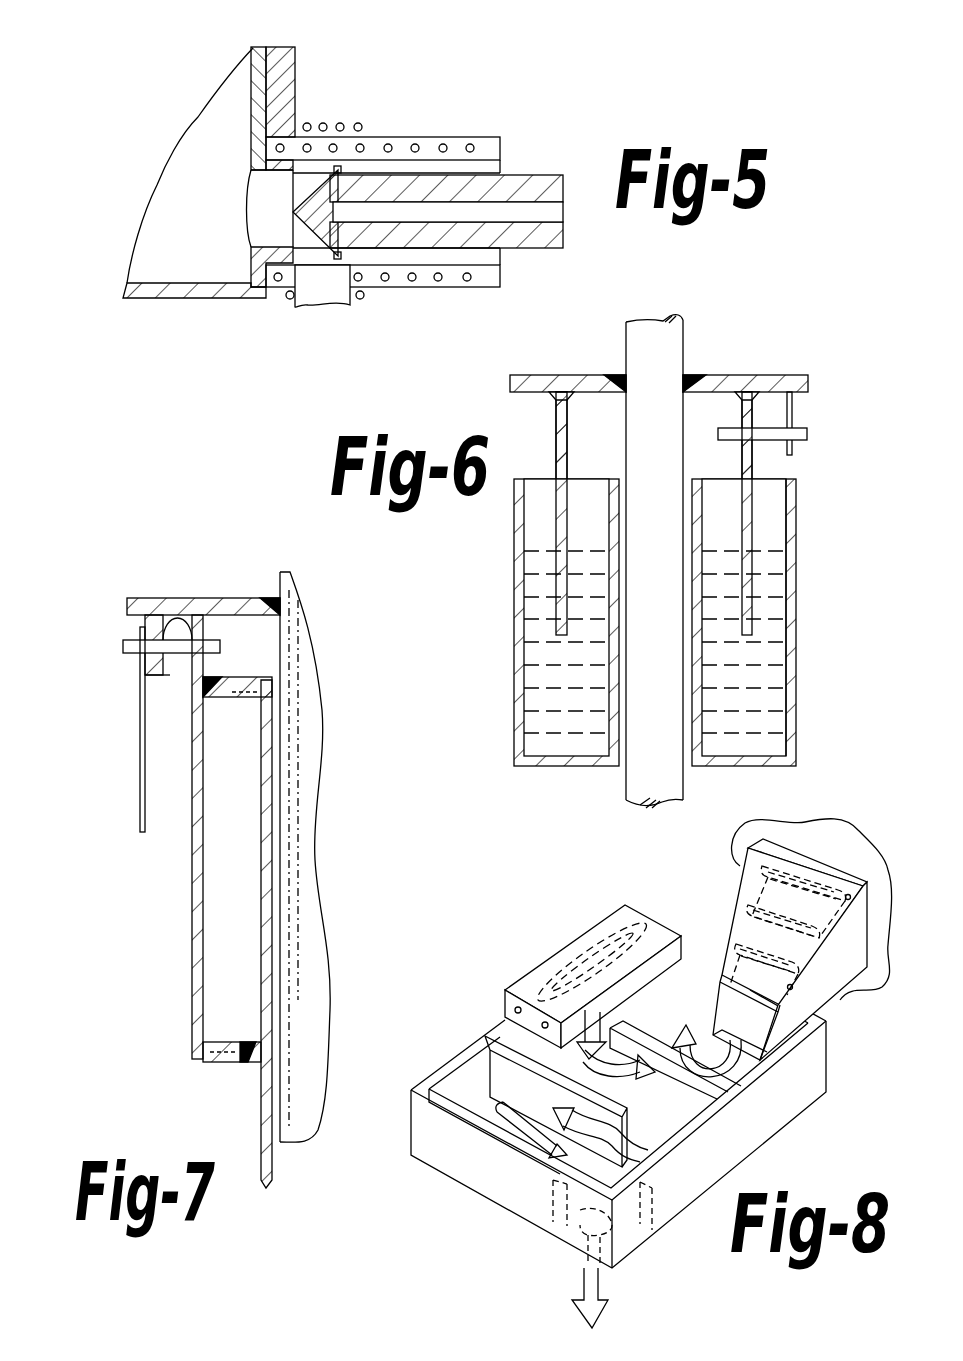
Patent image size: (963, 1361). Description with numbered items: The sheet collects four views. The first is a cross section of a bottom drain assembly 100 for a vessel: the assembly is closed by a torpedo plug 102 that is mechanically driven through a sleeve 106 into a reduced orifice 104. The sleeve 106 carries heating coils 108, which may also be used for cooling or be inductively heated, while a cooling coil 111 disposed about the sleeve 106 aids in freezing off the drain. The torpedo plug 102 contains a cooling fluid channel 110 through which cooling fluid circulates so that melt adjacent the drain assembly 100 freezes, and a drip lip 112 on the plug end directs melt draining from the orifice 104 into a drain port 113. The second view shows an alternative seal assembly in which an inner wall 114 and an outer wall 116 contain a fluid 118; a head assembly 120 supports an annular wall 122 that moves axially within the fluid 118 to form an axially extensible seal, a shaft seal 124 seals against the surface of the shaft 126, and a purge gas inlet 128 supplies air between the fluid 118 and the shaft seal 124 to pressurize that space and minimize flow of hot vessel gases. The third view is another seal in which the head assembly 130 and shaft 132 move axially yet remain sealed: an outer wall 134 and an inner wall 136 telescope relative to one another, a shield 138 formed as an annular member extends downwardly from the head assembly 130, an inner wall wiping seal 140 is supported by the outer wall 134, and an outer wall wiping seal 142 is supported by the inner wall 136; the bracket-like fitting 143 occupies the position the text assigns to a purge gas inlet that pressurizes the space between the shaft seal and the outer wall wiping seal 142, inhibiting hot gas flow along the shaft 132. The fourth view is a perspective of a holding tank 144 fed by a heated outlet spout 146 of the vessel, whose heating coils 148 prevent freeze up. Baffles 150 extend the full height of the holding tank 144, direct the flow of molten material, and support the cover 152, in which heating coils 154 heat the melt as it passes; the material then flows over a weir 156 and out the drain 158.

In FIG. 5, the drain assembly 100 is at (430, 126).
In FIG. 5, the torpedo plug 102 is at (512, 191).
In FIG. 5, the reduced orifice 104 is at (291, 242).
In FIG. 5, the sleeve 106 is at (422, 279).
In FIG. 5, the heating coils 108 is at (469, 281).
In FIG. 5, the cooling fluid channel 110 is at (523, 220).
In FIG. 5, the cooling coil 111 is at (358, 125).
In FIG. 5, the drip lip 112 is at (345, 258).
In FIG. 5, the drain port 113 is at (313, 280).
In FIG. 6, the inner wall 114 is at (700, 550).
In FIG. 6, the outer wall 116 is at (790, 586).
In FIG. 6, the fluid 118 is at (770, 637).
In FIG. 6, the head assembly 120 is at (775, 375).
In FIG. 6, the annular wall 122 is at (753, 467).
In FIG. 6, the shaft seal 124 is at (693, 375).
In FIG. 6, the shaft 126 is at (637, 423).
In FIG. 6, the purge gas inlet 128 is at (763, 428).
In FIG. 7, the head assembly 130 is at (168, 600).
In FIG. 7, the shaft 132 is at (302, 668).
In FIG. 7, the outer wall 134 is at (191, 905).
In FIG. 7, the inner wall 136 is at (272, 912).
In FIG. 7, the shield 138 is at (140, 788).
In FIG. 7, the inner wall wiping seal 140 is at (220, 1062).
In FIG. 7, the outer wall wiping seal 142 is at (212, 700).
In FIG. 7, the bracket 143 is at (150, 655).
In FIG. 8, the holding tank 144 is at (730, 1135).
In FIG. 8, the outlet spout 146 is at (820, 985).
In FIG. 8, the heating coils 148 is at (775, 848).
In FIG. 8, the baffles 150 is at (510, 1072).
In FIG. 8, the cover 152 is at (614, 922).
In FIG. 8, the heating coils 154 is at (556, 936).
In FIG. 8, the weir 156 is at (643, 1262).
In FIG. 8, the drain 158 is at (600, 1222).